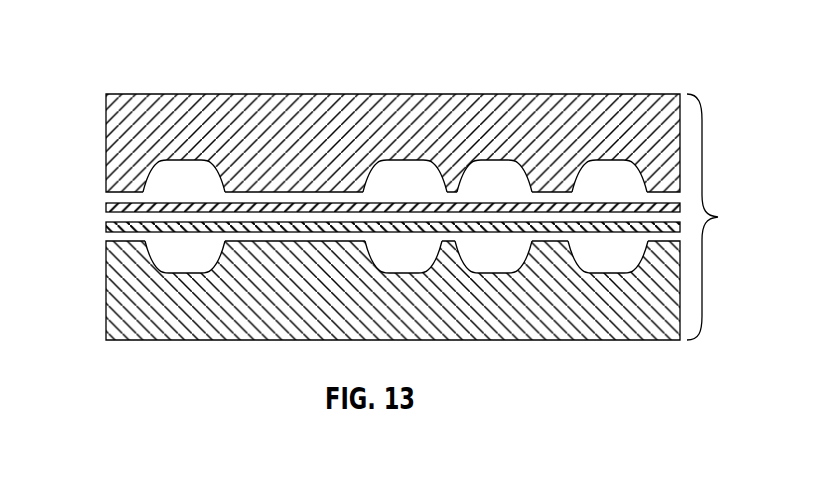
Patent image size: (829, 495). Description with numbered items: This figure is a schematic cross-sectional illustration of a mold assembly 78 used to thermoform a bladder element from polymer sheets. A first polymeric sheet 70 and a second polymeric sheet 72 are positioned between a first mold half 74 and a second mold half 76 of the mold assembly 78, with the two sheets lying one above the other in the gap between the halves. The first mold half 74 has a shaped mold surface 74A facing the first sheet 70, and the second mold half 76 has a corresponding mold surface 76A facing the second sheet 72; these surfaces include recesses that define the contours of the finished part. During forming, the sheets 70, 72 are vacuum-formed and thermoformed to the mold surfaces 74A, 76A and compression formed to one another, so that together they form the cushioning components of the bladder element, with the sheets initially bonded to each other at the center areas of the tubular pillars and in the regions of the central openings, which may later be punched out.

The first polymeric sheet 70 is at (110, 207).
The second polymeric sheet 72 is at (110, 227).
The first mold half 74 is at (106, 146).
The mold surface 74A is at (181, 168).
The second mold half 76 is at (106, 290).
The mold surface 76A is at (181, 266).
The mold assembly 78 is at (718, 217).